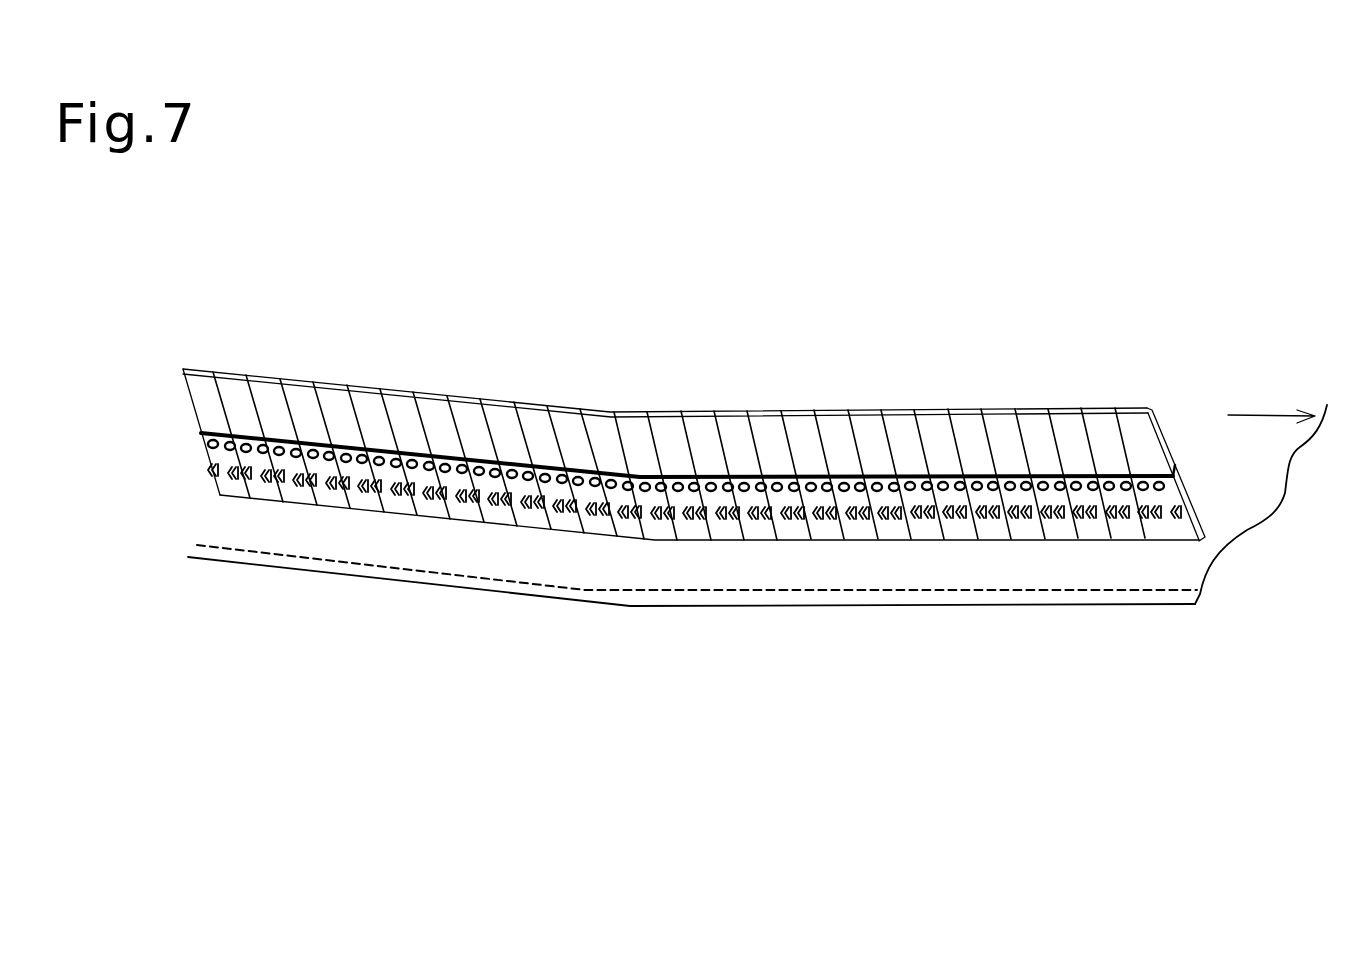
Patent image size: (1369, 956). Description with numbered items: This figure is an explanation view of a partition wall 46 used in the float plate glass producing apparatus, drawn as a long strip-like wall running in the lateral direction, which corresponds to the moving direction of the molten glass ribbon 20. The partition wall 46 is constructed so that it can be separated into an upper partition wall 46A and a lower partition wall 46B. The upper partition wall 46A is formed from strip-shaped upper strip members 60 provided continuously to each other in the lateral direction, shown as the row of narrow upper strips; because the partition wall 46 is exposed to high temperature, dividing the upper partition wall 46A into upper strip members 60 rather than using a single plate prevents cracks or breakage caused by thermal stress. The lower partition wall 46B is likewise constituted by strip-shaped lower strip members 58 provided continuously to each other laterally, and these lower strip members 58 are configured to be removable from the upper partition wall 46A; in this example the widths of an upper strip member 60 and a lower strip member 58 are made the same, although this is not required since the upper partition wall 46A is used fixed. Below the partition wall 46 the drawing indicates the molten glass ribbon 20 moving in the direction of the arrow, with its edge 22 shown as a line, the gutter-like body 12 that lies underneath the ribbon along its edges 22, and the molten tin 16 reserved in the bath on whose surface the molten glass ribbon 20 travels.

The gutter-like body 12 is at (1050, 590).
The molten tin 16 is at (746, 670).
The molten glass ribbon 20 is at (1265, 512).
The edge of molten glass ribbon 22 is at (962, 605).
The partition wall 46 is at (758, 322).
The upper partition wall 46A is at (585, 356).
The lower partition wall 46B is at (534, 554).
The lower strip member 58 is at (362, 490).
The upper strip member 60 is at (331, 396).